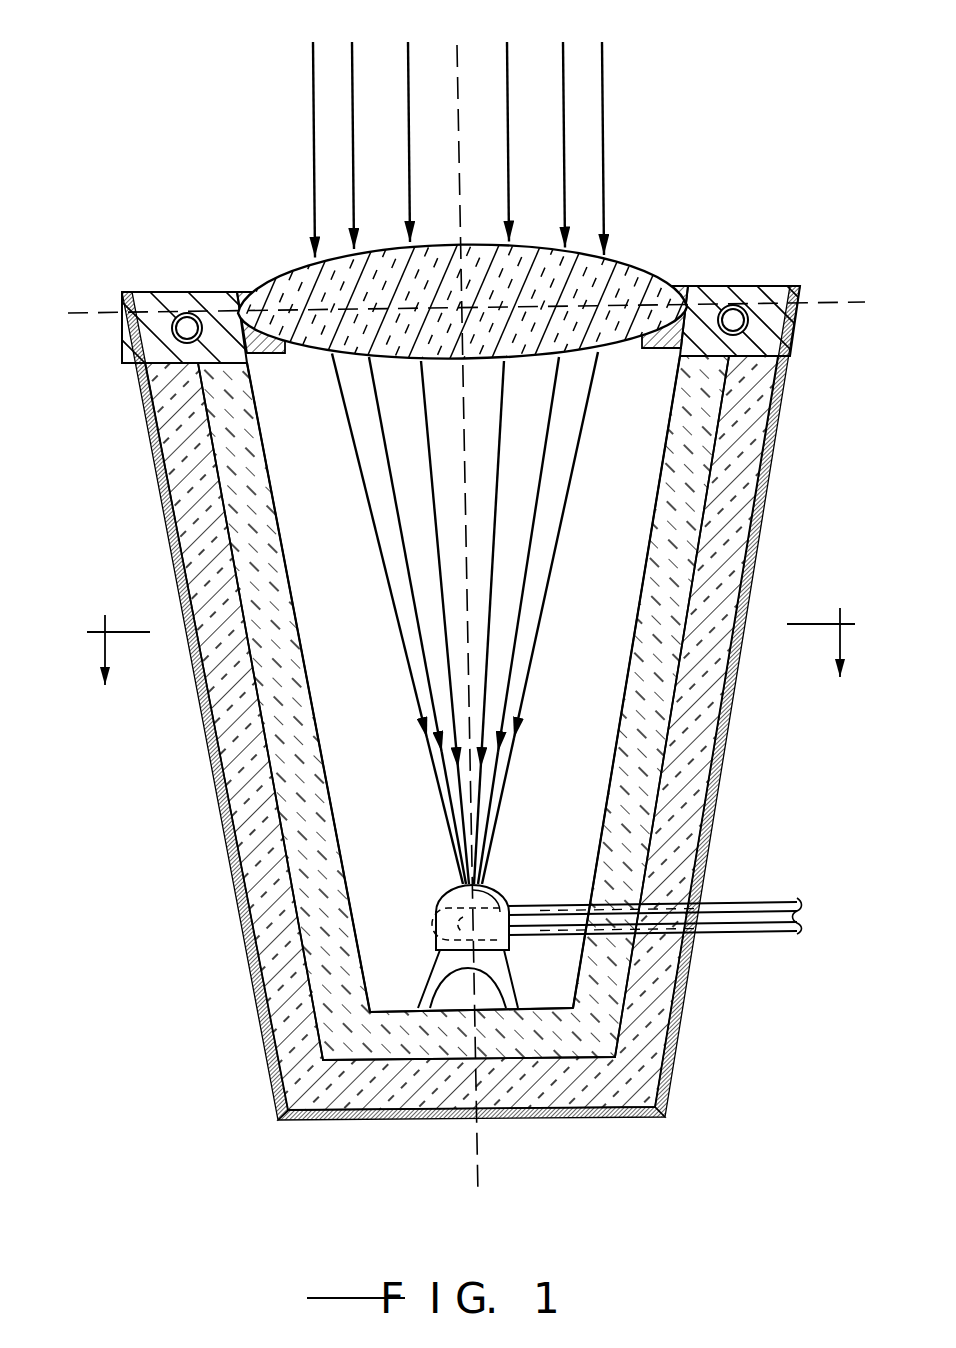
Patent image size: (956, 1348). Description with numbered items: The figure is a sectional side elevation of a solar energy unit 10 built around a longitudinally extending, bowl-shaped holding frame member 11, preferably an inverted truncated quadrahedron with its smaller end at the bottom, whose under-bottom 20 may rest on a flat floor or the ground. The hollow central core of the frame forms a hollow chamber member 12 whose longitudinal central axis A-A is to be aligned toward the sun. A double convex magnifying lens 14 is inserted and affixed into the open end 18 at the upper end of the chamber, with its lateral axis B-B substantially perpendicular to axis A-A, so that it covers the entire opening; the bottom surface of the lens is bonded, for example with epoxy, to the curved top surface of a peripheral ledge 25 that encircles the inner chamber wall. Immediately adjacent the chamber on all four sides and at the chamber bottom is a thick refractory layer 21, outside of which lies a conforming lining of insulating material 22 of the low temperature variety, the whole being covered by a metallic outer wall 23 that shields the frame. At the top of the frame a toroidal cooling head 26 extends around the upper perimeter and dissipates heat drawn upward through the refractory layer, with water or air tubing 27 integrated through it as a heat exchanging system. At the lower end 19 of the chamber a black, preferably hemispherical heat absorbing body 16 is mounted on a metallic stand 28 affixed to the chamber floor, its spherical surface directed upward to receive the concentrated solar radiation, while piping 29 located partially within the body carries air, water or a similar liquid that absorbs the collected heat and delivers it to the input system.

The solar energy unit 10 is at (710, 1041).
The holding frame member 11 is at (247, 959).
The hollow chamber member 12 is at (615, 578).
The convex magnifying lens 14 is at (307, 290).
The heat absorbing body 16 is at (437, 910).
The open end of chamber 18 is at (665, 281).
The lower end (floor) of chamber 19 is at (395, 1000).
The under-bottom of holding frame 20 is at (553, 1118).
The refractory layer 21 is at (305, 877).
The lining of insulating material 22 is at (290, 1050).
The outer wall 23 is at (223, 797).
The peripheral ledge 25 is at (273, 356).
The cooling head 26 is at (150, 340).
The water or air tubing 27 is at (187, 313).
The metallic stand 28 is at (430, 977).
The piping 29 is at (487, 905).